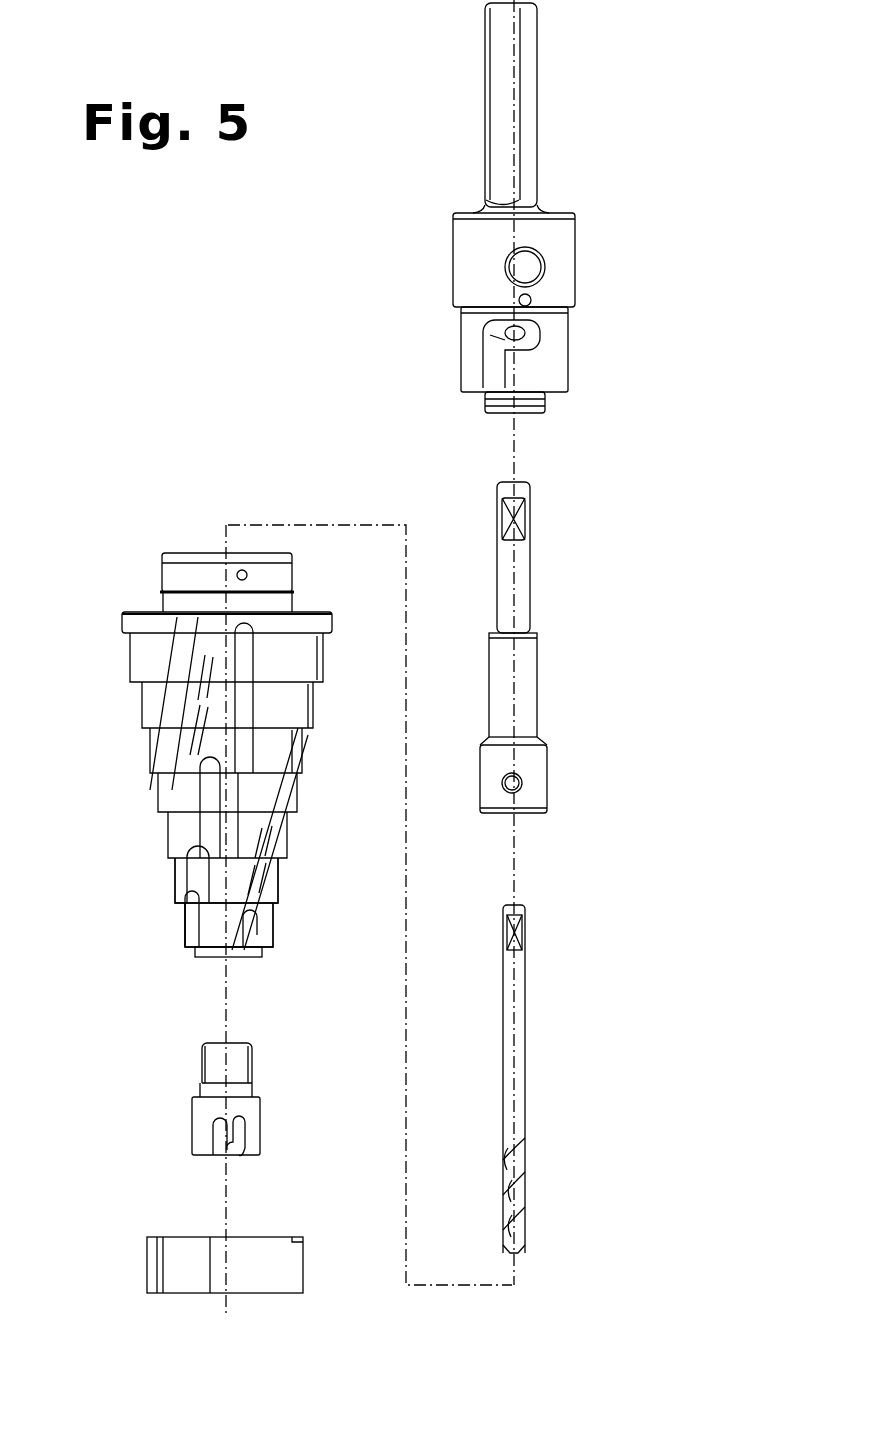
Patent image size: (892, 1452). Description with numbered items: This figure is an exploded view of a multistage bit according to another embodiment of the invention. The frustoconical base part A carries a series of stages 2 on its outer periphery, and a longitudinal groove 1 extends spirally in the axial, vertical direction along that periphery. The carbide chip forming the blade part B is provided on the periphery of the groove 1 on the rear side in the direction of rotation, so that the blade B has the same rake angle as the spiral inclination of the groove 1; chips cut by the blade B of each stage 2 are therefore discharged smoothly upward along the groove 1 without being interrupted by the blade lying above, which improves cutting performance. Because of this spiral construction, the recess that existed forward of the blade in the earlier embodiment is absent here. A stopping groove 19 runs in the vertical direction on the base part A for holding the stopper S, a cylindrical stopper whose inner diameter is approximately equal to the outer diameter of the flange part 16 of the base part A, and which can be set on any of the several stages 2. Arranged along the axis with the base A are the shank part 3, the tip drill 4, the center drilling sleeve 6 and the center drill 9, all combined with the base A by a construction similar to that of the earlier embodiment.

The shank part 3 is at (523, 118).
The center drilling sleeve 6 is at (527, 685).
The center drill 9 is at (520, 1063).
The base part A is at (140, 658).
The stopping groove 19 is at (237, 712).
The flange part 16 is at (257, 837).
The stage 2 is at (275, 885).
The longitudinal groove 1 is at (213, 930).
The blade part B is at (232, 888).
The tip drill 4 is at (202, 1128).
The stopper S is at (148, 1265).